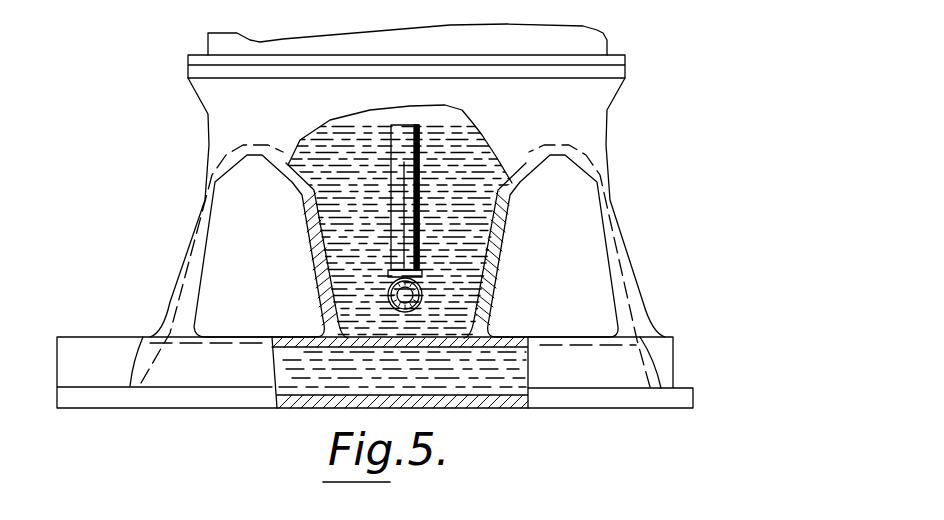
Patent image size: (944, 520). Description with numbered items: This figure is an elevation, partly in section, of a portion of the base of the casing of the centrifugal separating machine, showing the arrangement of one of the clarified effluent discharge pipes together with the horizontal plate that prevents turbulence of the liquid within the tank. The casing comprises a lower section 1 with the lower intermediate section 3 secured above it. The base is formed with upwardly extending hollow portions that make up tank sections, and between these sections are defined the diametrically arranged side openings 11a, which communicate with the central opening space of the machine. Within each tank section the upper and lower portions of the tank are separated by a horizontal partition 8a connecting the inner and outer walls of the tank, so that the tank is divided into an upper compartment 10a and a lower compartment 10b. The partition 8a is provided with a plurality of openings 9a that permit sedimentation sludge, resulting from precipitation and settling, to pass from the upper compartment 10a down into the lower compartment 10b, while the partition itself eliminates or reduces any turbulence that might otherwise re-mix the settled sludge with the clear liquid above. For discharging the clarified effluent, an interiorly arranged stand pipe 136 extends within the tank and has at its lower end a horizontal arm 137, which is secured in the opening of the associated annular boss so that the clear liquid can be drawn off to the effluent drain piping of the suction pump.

The lower section 1 is at (375, 231).
The lower intermediate section 3 is at (407, 39).
The partition 8a is at (437, 337).
The opening 9a is at (341, 335).
The upper compartment 10a is at (333, 225).
The lower compartment 10b is at (297, 368).
The side opening 11a is at (406, 246).
The stand pipe 136 is at (410, 188).
The horizontal arm 137 is at (422, 297).